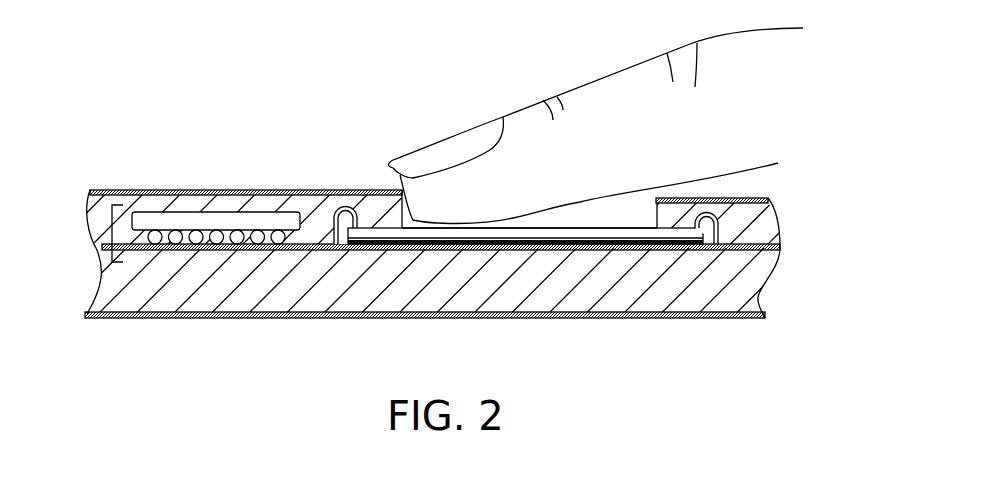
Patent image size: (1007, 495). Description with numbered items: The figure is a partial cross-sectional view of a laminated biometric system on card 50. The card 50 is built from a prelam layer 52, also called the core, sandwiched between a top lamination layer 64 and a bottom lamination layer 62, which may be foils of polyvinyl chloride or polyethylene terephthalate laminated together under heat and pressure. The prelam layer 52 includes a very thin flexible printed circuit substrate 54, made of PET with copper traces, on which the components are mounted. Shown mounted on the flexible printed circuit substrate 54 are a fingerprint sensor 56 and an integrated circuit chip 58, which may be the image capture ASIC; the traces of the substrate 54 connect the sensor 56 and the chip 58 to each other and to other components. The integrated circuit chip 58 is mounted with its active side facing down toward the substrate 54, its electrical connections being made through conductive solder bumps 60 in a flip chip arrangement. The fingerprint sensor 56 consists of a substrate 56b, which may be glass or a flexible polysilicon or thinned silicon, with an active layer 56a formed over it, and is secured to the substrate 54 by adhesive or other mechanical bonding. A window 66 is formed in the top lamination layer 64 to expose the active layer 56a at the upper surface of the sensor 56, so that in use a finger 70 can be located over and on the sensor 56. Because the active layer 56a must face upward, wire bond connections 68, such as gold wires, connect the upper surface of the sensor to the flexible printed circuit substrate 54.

The laminated BSoC (card) 50 is at (307, 323).
The prelam layer 52 is at (112, 240).
The flexible printed circuit substrate 54 is at (747, 240).
The fingerprint sensor 56 is at (615, 245).
The active layer 56a is at (585, 231).
The substrate (of fingerprint sensor) 56b is at (685, 240).
The integrated circuit chip 58 is at (163, 211).
The conductive solder bumps 60 is at (278, 230).
The bottom lamination layer 62 is at (507, 292).
The top lamination layer 64 is at (347, 206).
The window 66 is at (413, 220).
The wire bond connections 68 is at (333, 233).
The finger 70 is at (621, 82).